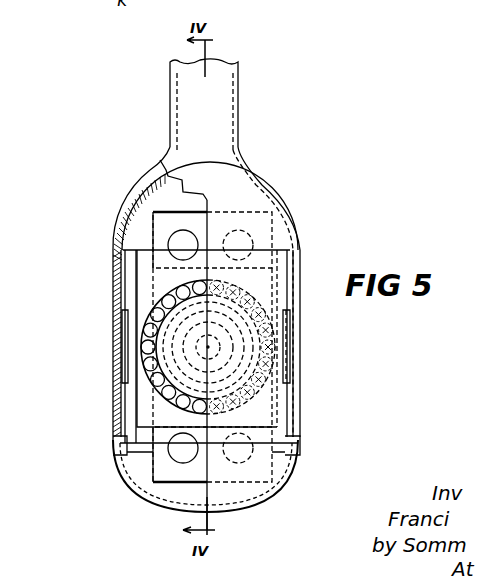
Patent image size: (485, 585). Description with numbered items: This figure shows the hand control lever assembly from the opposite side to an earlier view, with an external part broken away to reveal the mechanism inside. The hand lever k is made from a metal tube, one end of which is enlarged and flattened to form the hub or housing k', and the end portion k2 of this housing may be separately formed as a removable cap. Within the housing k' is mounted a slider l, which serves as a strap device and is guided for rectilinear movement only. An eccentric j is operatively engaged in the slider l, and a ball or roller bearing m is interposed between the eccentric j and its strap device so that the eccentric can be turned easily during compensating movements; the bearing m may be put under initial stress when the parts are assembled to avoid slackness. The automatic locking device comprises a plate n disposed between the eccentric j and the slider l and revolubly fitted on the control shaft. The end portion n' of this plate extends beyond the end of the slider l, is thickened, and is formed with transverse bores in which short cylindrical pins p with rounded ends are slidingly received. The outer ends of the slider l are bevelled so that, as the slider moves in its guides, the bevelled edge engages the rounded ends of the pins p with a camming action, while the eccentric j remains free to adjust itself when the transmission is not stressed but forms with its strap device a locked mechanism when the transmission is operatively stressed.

The hand lever k is at (206, 249).
The hub or housing k' is at (309, 328).
The end portion of housing k2 is at (125, 470).
The slider l is at (140, 258).
The ball or roller bearing m is at (137, 335).
The plate n is at (311, 357).
The end portion of plate n' is at (165, 347).
The eccentric j is at (153, 357).
The pin p is at (178, 237).